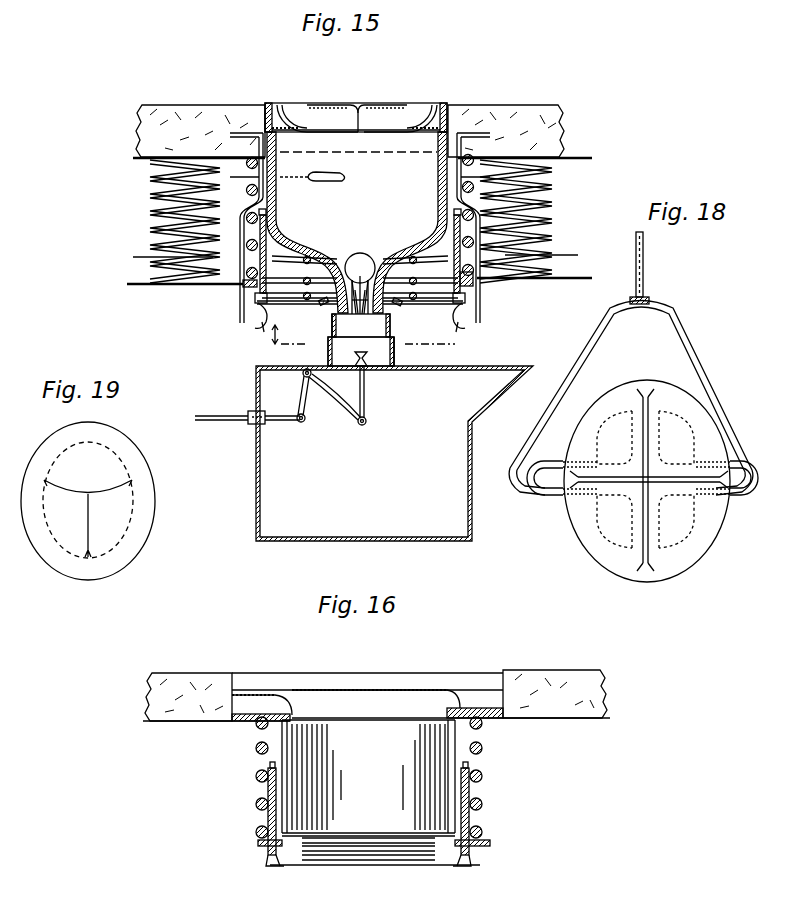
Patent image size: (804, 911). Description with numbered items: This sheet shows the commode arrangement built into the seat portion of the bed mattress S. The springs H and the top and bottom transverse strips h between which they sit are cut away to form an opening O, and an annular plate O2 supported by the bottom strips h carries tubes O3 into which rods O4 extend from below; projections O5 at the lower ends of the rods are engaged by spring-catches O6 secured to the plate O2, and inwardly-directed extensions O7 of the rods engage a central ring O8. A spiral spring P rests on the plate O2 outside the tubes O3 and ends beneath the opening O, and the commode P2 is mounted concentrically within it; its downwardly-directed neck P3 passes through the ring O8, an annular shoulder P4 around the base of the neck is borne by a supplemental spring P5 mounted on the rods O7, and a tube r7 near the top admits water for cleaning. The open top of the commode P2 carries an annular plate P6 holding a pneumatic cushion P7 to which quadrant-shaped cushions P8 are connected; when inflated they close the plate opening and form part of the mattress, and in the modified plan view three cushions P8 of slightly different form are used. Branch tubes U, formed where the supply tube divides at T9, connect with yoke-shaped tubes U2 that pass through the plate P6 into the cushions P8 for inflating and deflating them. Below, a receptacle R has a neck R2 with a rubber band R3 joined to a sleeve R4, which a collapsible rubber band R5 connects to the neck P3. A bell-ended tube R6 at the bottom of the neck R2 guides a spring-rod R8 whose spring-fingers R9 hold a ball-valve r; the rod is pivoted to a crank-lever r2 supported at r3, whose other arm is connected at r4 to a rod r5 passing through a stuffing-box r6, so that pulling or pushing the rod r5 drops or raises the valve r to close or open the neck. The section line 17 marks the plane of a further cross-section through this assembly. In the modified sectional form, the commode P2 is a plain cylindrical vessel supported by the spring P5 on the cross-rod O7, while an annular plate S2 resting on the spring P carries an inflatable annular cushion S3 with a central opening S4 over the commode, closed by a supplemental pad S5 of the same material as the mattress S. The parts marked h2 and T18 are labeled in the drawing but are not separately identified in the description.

In FIG. 15, the mattress S is at (140, 118).
In FIG. 16, the mattress S is at (376, 678).
In FIG. 16, the annular plate S2 is at (484, 720).
In FIG. 16, the annular cushion S3 is at (262, 698).
In FIG. 16, the central circular opening S4 is at (376, 704).
In FIG. 16, the supplemental pad S5 is at (430, 673).
In FIG. 15, the transverse strips h is at (134, 290).
In FIG. 15, the rail flange h2 is at (148, 159).
In FIG. 15, the springs H is at (150, 222).
In FIG. 15, the opening O is at (256, 112).
In FIG. 16, the opening O is at (503, 670).
In FIG. 15, the annular plate O2 is at (243, 284).
In FIG. 16, the annular plate O2 is at (490, 842).
In FIG. 15, the tubes O3 is at (258, 233).
In FIG. 16, the tubes O3 is at (268, 796).
In FIG. 15, the rods O4 is at (255, 297).
In FIG. 16, the rods O4 is at (268, 764).
In FIG. 15, the projections O5 is at (267, 307).
In FIG. 16, the projections O5 is at (272, 866).
In FIG. 15, the spring-catches O6 is at (258, 305).
In FIG. 16, the spring-catches O6 is at (266, 862).
In FIG. 15, the inwardly-directed extensions O7 is at (312, 302).
In FIG. 16, the inwardly-directed extensions O7 is at (360, 867).
In FIG. 15, the central ring O8 is at (399, 305).
In FIG. 15, the spiral spring P is at (248, 192).
In FIG. 16, the spiral spring P is at (256, 778).
In FIG. 15, the commode P2 is at (275, 215).
In FIG. 16, the commode P2 is at (368, 776).
In FIG. 15, the neck P3 is at (341, 257).
In FIG. 15, the annular shoulder P4 is at (413, 247).
In FIG. 15, the supplemental spring P5 is at (304, 259).
In FIG. 16, the supplemental spring P5 is at (400, 846).
In FIG. 15, the annular plate P6 is at (428, 141).
In FIG. 15, the pneumatic cushion P7 is at (430, 110).
In FIG. 18, the pneumatic cushion P7 is at (694, 545).
In FIG. 19, the pneumatic cushion P7 is at (146, 522).
In FIG. 15, the quadrant-shaped cushions P8 is at (372, 106).
In FIG. 18, the quadrant-shaped cushions P8 is at (617, 426).
In FIG. 19, the quadrant-shaped cushions P8 is at (88, 500).
In FIG. 15, the branch tubes U is at (350, 256).
In FIG. 18, the branch tubes U is at (682, 322).
In FIG. 15, the yoke-shaped tubes U2 is at (272, 128).
In FIG. 18, the yoke-shaped tubes U2 is at (538, 497).
In FIG. 18, the dividing point of tube T9 is at (650, 303).
In FIG. 18, the rod T18 is at (643, 262).
In FIG. 15, the vessel or receptacle R is at (394, 453).
In FIG. 15, the neck R2 is at (395, 360).
In FIG. 15, the rubber band R3 is at (397, 352).
In FIG. 15, the sleeve R4 is at (361, 325).
In FIG. 15, the collapsible rubber band R5 is at (331, 336).
In FIG. 15, the tube R6 is at (366, 368).
In FIG. 15, the spring-rod R8 is at (360, 387).
In FIG. 15, the spring-fingers R9 is at (373, 273).
In FIG. 15, the ball-valve r is at (361, 255).
In FIG. 15, the crank-lever r2 is at (340, 412).
In FIG. 15, the pivot of crank-lever r3 is at (304, 377).
In FIG. 15, the pivotal connection r4 is at (300, 423).
In FIG. 15, the rod r5 is at (236, 421).
In FIG. 15, the stuffing-box r6 is at (248, 412).
In FIG. 15, the tube r7 is at (335, 174).
In FIG. 15, the section line 17 is at (365, 340).